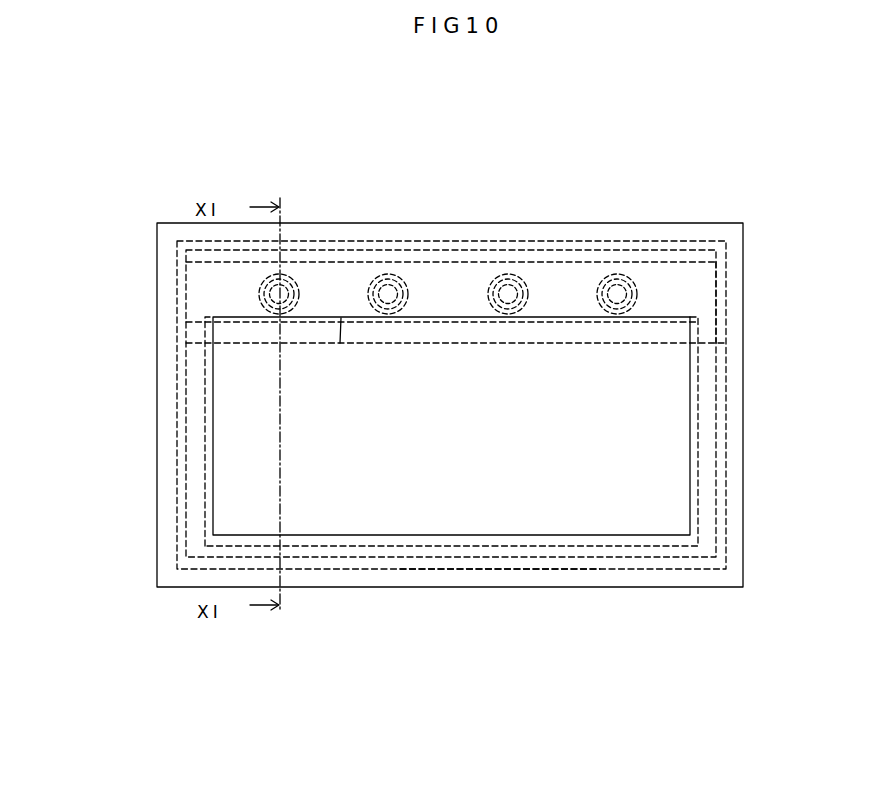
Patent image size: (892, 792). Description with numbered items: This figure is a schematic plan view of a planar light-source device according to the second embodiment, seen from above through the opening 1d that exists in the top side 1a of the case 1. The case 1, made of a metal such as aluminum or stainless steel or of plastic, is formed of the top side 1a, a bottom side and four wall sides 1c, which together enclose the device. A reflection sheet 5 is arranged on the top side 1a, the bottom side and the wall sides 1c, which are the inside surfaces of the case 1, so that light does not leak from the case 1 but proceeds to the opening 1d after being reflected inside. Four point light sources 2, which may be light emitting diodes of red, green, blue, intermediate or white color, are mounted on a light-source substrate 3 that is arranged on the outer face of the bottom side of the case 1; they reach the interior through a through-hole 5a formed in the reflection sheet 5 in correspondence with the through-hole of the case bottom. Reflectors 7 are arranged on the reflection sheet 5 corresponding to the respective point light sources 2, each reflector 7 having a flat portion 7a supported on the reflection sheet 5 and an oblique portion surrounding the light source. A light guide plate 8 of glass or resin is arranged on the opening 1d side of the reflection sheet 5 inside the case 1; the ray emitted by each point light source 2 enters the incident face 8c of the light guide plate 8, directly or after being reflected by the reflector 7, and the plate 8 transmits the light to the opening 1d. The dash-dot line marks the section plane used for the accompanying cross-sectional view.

The case 1 is at (372, 232).
The top side 1a is at (488, 562).
The wall sides 1c is at (400, 250).
The opening 1d is at (507, 535).
The point light sources 2 is at (388, 292).
The light-source substrate 3 is at (532, 267).
The reflection sheet 5 is at (598, 557).
The through-hole 5a is at (642, 292).
The reflector 7 is at (330, 437).
The flat portion 7a is at (568, 287).
The light guide plate 8 is at (650, 545).
The incident face 8c is at (338, 343).